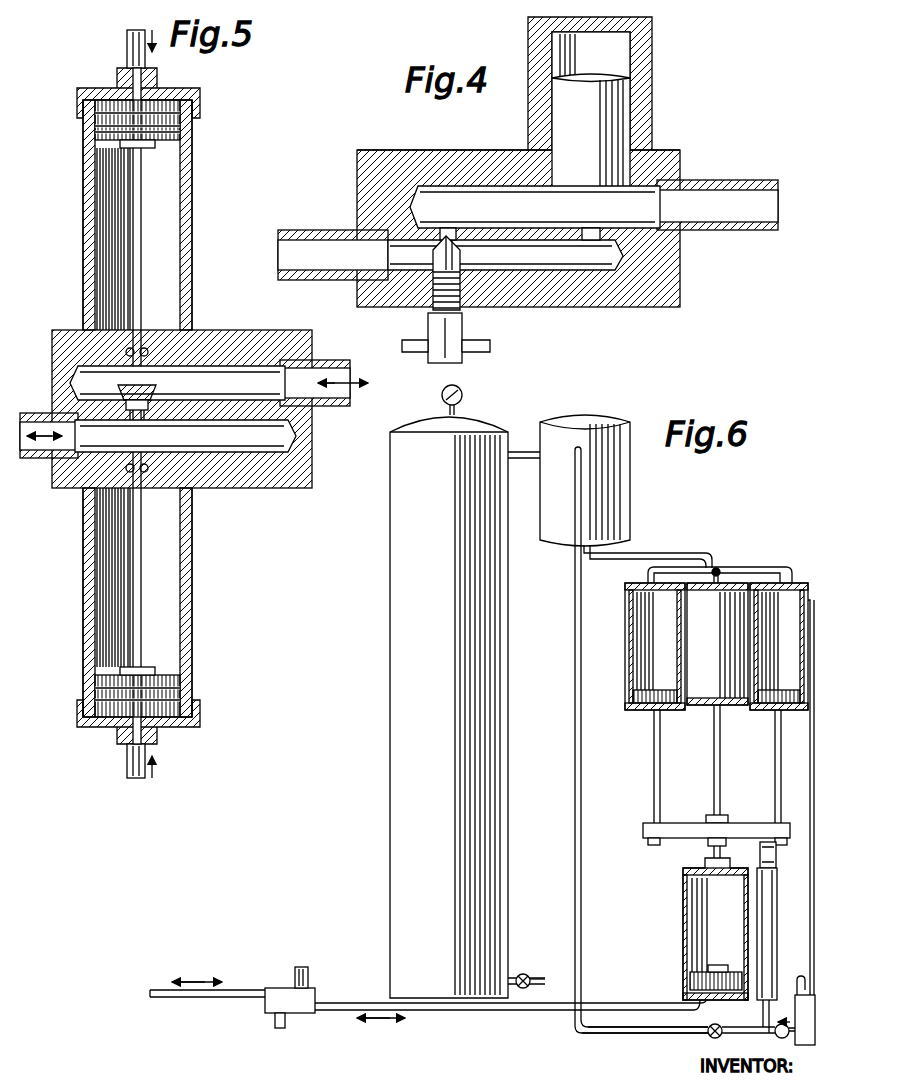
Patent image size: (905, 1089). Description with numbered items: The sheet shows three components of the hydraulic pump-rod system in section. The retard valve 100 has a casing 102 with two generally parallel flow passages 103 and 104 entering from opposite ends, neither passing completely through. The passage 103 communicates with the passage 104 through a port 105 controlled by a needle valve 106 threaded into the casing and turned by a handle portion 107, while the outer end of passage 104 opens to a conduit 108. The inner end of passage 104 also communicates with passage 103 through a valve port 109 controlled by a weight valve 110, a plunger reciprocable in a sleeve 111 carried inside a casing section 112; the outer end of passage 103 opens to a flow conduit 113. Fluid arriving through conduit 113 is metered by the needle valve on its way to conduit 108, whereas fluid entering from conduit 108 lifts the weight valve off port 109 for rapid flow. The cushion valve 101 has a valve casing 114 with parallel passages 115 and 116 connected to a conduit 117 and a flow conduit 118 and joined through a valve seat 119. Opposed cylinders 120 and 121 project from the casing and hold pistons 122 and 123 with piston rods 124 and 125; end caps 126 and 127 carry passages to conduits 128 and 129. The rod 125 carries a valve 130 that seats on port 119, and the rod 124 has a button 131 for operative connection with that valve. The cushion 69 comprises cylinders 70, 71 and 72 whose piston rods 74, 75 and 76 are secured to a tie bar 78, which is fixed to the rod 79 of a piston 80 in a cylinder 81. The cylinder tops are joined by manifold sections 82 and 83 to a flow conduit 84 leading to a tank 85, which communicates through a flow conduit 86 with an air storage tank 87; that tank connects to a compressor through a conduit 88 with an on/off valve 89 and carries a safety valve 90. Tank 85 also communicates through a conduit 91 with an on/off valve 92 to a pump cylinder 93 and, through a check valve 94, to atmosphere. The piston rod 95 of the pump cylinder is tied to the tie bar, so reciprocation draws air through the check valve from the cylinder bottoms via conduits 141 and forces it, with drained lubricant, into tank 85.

In FIG. 6, the cushion 69 is at (644, 782).
In FIG. 6, the cylinder 70 is at (625, 620).
In FIG. 6, the cylinder 71 is at (808, 592).
In FIG. 6, the cylinder 72 is at (700, 582).
In FIG. 6, the rod 74 is at (654, 751).
In FIG. 6, the rod 75 is at (775, 765).
In FIG. 6, the rod 76 is at (714, 751).
In FIG. 6, the tie bar 78 is at (678, 823).
In FIG. 6, the rod 79 is at (712, 851).
In FIG. 6, the piston 80 is at (694, 978).
In FIG. 6, the cylinder 81 is at (683, 902).
In FIG. 6, the manifold section 82 is at (756, 568).
In FIG. 6, the manifold section 83 is at (720, 568).
In FIG. 6, the flow conduit 84 is at (664, 555).
In FIG. 6, the tank 85 is at (630, 470).
In FIG. 6, the flow conduit 86 is at (522, 452).
In FIG. 6, the air storage tank 87 is at (390, 770).
In FIG. 6, the conduit 88 is at (540, 978).
In FIG. 6, the on/off valve 89 is at (522, 973).
In FIG. 6, the safety valve 90 is at (462, 395).
In FIG. 6, the conduit 91 is at (575, 822).
In FIG. 6, the on/off valve 92 is at (708, 1036).
In FIG. 6, the pump cylinder 93 is at (777, 933).
In FIG. 6, the check valve 94 is at (778, 1038).
In FIG. 6, the piston rod 95 is at (776, 850).
In FIG. 4, the retard valve 100 is at (673, 148).
In FIG. 6, the retard valve 100 is at (272, 988).
In FIG. 5, the cushion valve 101 is at (188, 569).
In FIG. 4, the casing 102 is at (680, 280).
In FIG. 4, the flow passage 103 is at (496, 184).
In FIG. 4, the flow passage 104 is at (548, 262).
In FIG. 4, the port 105 is at (447, 232).
In FIG. 4, the needle valve 106 is at (460, 262).
In FIG. 4, the handle portion 107 is at (468, 340).
In FIG. 4, the conduit 108 is at (320, 232).
In FIG. 4, the valve port 109 is at (588, 242).
In FIG. 4, the weight valve 110 is at (604, 104).
In FIG. 4, the sleeve 111 is at (636, 68).
In FIG. 4, the casing section 112 is at (650, 44).
In FIG. 4, the flow conduit 113 is at (720, 232).
In FIG. 5, the valve casing 114 is at (276, 482).
In FIG. 5, the passage 115 is at (240, 445).
In FIG. 5, the passage 116 is at (234, 372).
In FIG. 5, the conduit 117 is at (30, 466).
In FIG. 5, the flow conduit 118 is at (318, 362).
In FIG. 5, the valve seat 119 is at (120, 398).
In FIG. 5, the cylinder 120 is at (192, 616).
In FIG. 5, the cylinder 121 is at (192, 256).
In FIG. 5, the piston 122 is at (170, 686).
In FIG. 5, the piston 123 is at (170, 135).
In FIG. 5, the piston rod 124 is at (133, 612).
In FIG. 5, the piston rod 125 is at (140, 223).
In FIG. 5, the end cap 126 is at (98, 725).
In FIG. 5, the end cap 127 is at (88, 92).
In FIG. 5, the conduit 128 is at (127, 768).
In FIG. 5, the conduit 129 is at (127, 42).
In FIG. 5, the valve 130 is at (156, 390).
In FIG. 5, the button 131 is at (146, 410).
In FIG. 6, the conduit 141 is at (808, 905).